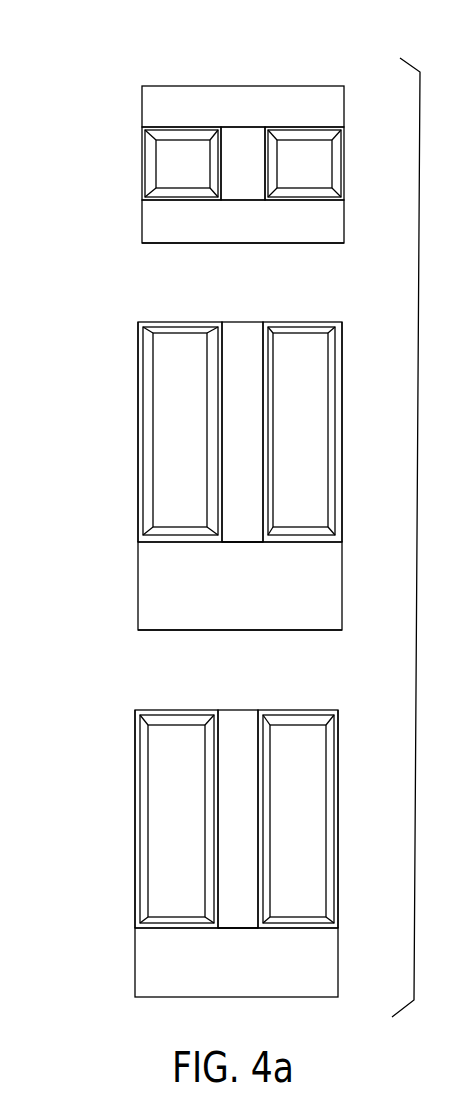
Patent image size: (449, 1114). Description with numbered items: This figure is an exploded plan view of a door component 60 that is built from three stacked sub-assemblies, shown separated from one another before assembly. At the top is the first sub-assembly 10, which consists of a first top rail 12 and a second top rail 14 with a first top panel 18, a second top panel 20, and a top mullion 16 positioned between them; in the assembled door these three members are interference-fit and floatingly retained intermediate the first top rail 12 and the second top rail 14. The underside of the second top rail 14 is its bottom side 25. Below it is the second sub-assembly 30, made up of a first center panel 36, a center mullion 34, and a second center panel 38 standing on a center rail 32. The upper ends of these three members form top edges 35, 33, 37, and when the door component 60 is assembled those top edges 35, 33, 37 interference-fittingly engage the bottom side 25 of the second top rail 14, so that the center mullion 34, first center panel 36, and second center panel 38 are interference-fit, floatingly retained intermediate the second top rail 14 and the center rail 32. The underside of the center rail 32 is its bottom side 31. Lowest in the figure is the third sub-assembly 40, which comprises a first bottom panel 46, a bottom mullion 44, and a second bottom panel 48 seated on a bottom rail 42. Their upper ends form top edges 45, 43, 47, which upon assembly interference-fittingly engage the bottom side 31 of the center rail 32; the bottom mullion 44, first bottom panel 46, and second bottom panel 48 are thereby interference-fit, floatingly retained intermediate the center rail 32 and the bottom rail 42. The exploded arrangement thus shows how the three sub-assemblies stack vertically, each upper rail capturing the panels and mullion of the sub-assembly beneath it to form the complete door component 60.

The door component 60 is at (258, 38).
The first sub-assembly 10 is at (114, 127).
The first top rail 12 is at (345, 100).
The second top rail 14 is at (344, 222).
The top mullion 16 is at (250, 126).
The first top panel 18 is at (142, 158).
The second top panel 20 is at (344, 150).
The bottom side 25 is at (302, 244).
The second sub-assembly 30 is at (111, 420).
The bottom side 31 is at (292, 633).
The center rail 32 is at (342, 556).
The top edge 33 is at (245, 319).
The center mullion 34 is at (240, 532).
The top edge 35 is at (180, 320).
The first center panel 36 is at (138, 383).
The top edge 37 is at (304, 318).
The second center panel 38 is at (342, 384).
The third sub-assembly 40 is at (127, 893).
The bottom rail 42 is at (338, 960).
The top edge 43 is at (237, 707).
The bottom mullion 44 is at (238, 918).
The top edge 45 is at (172, 708).
The first bottom panel 46 is at (135, 823).
The top edge 47 is at (320, 708).
The second bottom panel 48 is at (339, 792).